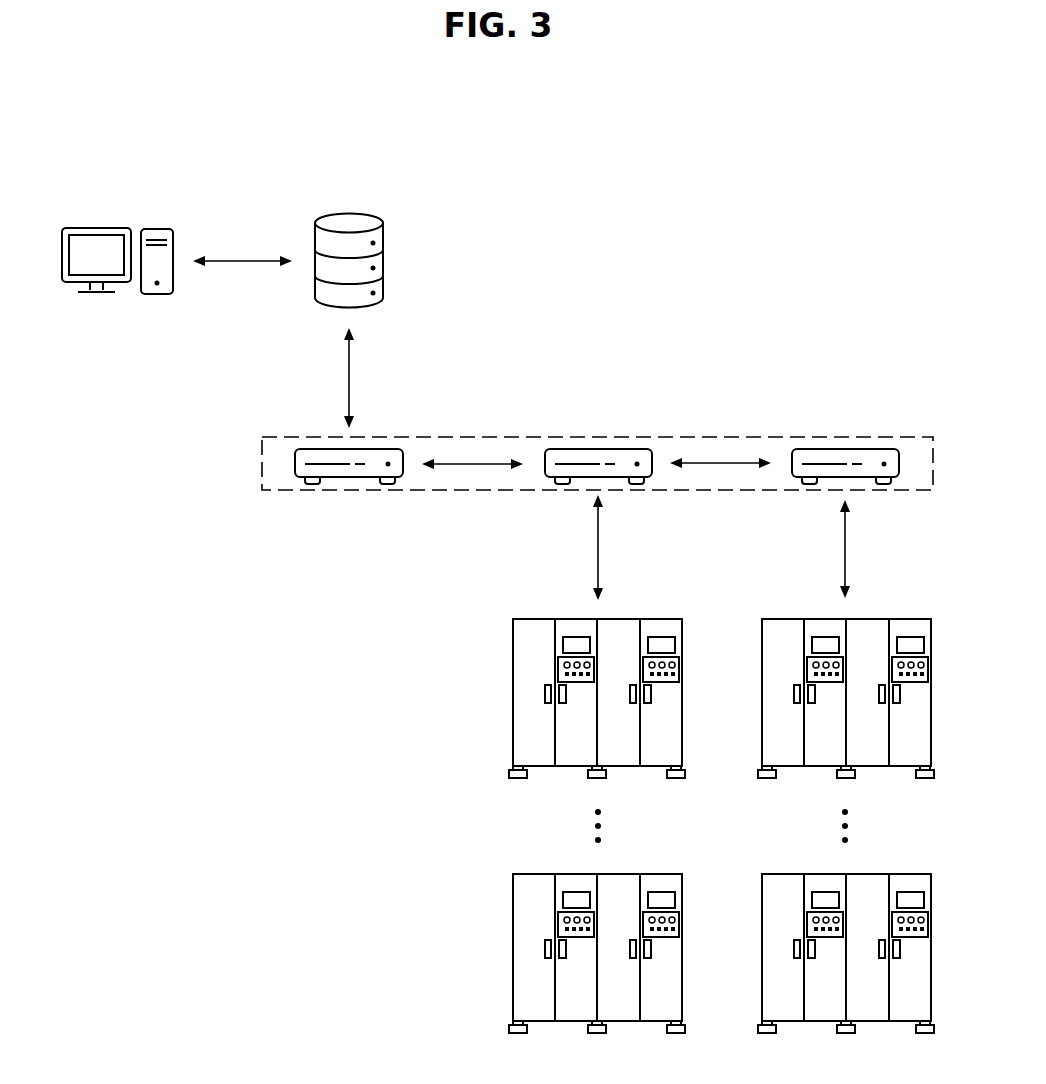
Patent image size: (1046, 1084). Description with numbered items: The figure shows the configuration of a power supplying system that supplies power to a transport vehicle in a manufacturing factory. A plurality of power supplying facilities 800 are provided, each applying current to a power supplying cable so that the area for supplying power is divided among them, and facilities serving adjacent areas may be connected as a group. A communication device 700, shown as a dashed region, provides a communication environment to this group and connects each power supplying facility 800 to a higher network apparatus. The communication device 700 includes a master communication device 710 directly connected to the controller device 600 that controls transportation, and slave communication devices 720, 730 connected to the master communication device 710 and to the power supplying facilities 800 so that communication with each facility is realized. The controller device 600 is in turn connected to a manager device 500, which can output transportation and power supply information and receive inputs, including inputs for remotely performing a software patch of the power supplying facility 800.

The manager device 500 is at (95, 228).
The controller device 600 is at (348, 214).
The communication device 700 is at (733, 437).
The master communication device 710 is at (349, 477).
The slave communication device 720 is at (595, 449).
The third network device 730 is at (843, 449).
The power supplying facility 800 is at (659, 619).